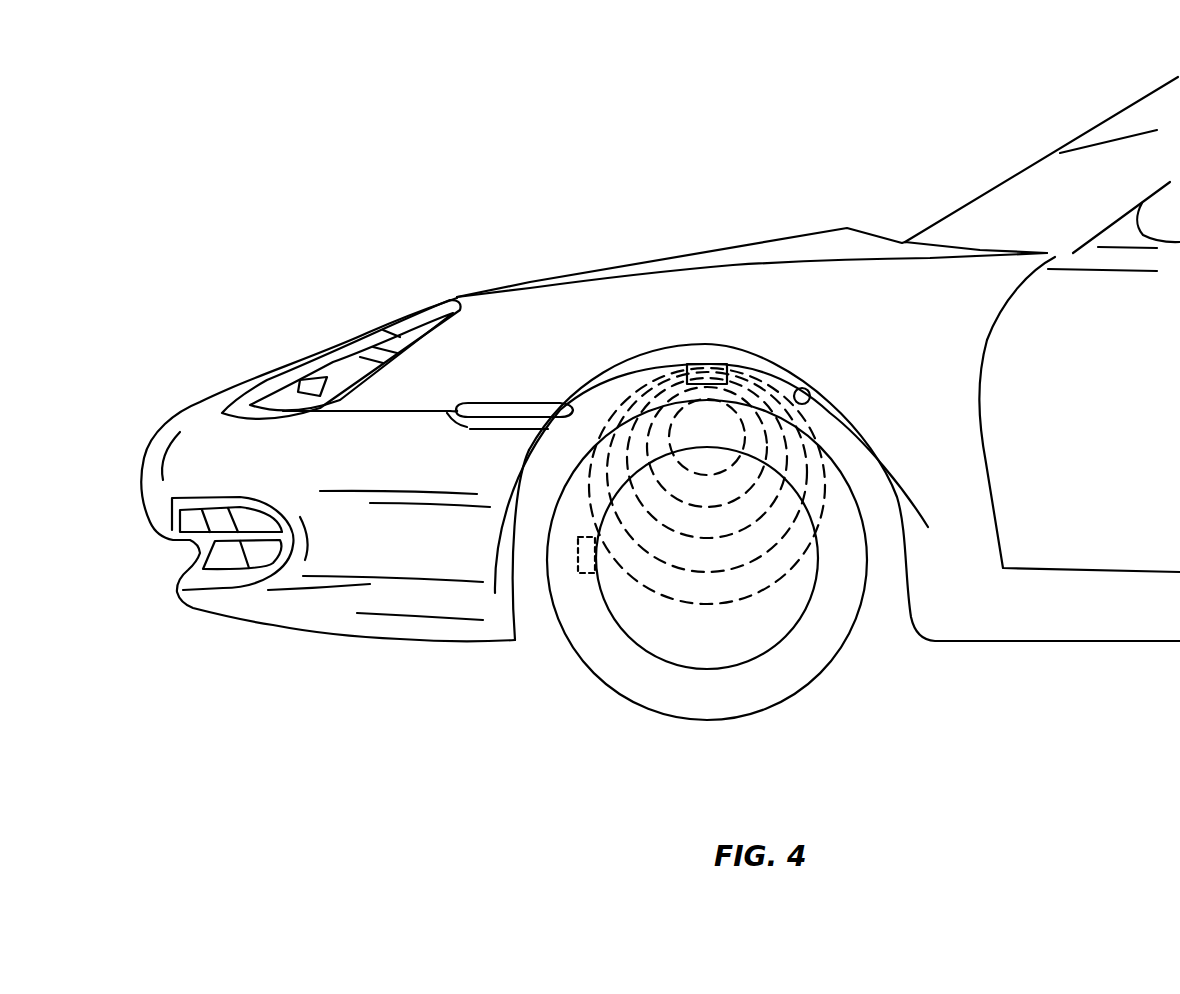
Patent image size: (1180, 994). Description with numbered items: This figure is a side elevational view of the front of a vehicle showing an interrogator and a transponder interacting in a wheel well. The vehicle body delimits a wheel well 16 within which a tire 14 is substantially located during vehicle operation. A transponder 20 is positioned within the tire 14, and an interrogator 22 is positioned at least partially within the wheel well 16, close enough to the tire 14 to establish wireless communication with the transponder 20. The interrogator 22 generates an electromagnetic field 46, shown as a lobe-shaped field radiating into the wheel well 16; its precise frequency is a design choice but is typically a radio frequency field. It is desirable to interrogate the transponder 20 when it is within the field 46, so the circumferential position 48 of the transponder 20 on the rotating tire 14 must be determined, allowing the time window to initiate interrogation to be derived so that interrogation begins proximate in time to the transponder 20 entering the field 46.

The tire 14 is at (788, 700).
The wheel well 16 is at (813, 400).
The transponder 20 is at (612, 472).
The interrogator 22 is at (707, 372).
The electromagnetic field 46 is at (787, 573).
The circumferential position 48 is at (594, 522).